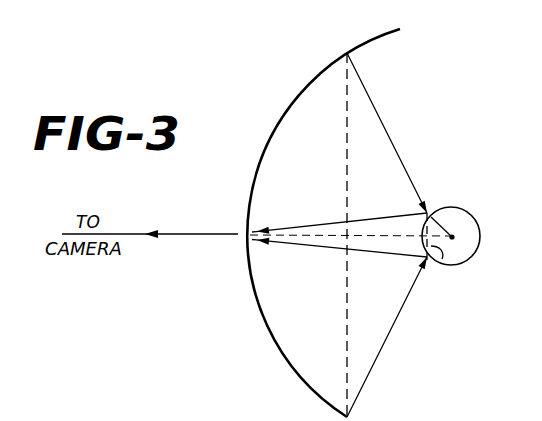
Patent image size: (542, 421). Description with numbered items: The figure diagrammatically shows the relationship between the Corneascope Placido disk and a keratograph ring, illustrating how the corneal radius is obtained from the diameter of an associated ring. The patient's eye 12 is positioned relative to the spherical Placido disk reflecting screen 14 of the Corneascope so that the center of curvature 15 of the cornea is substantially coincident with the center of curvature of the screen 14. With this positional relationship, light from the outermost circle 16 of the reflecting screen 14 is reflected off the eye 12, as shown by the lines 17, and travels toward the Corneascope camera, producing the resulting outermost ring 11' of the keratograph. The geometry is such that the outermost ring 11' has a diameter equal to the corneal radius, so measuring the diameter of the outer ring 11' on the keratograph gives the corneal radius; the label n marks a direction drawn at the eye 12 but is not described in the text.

The spherical Placido disk reflecting screen 14 is at (305, 86).
The center of curvature of the cornea 15 is at (452, 237).
The eye 12 is at (480, 248).
The normal n is at (455, 208).
The outermost ring of the keratograph 11' is at (449, 271).
The outermost circle of the reflecting screen 16 is at (346, 302).
The lines 17 is at (388, 141).